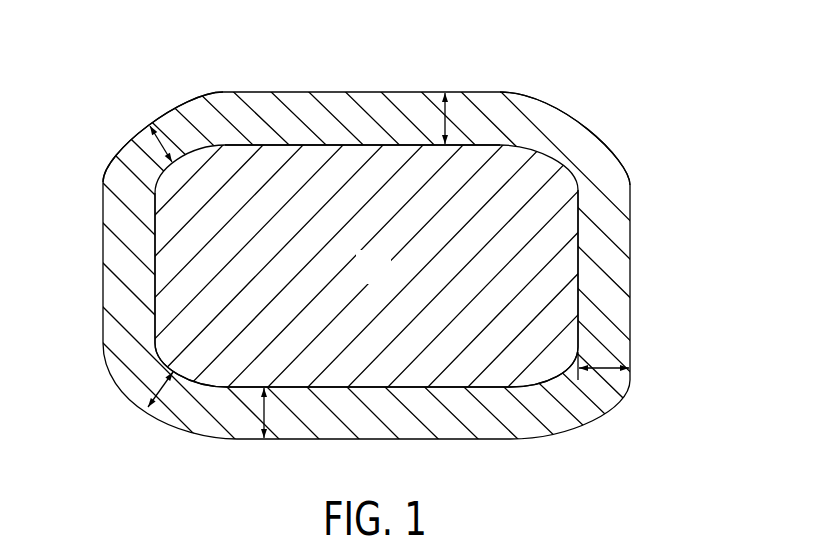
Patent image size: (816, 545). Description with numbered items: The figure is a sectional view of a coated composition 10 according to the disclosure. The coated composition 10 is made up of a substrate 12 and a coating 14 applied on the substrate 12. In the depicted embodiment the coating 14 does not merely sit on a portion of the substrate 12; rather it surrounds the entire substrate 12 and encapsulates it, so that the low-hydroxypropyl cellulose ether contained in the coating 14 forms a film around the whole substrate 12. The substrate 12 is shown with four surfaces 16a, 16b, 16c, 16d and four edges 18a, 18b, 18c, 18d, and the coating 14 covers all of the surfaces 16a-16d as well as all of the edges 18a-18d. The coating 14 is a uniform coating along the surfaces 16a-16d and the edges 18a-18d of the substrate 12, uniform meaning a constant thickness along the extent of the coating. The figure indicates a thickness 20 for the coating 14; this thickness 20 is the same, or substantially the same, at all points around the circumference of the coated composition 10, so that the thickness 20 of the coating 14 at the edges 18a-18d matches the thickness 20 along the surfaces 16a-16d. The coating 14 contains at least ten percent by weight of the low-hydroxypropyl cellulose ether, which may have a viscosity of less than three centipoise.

The coated composition 10 is at (408, 244).
The substrate 12 is at (386, 280).
The coating 14 is at (605, 217).
The surface 16a is at (154, 274).
The surface 16b is at (323, 145).
The surface 16c is at (585, 304).
The surface 16d is at (455, 388).
The edge 18a is at (130, 150).
The edge 18b is at (558, 110).
The edge 18c is at (567, 362).
The edge 18d is at (166, 362).
The thickness 20 is at (446, 115).